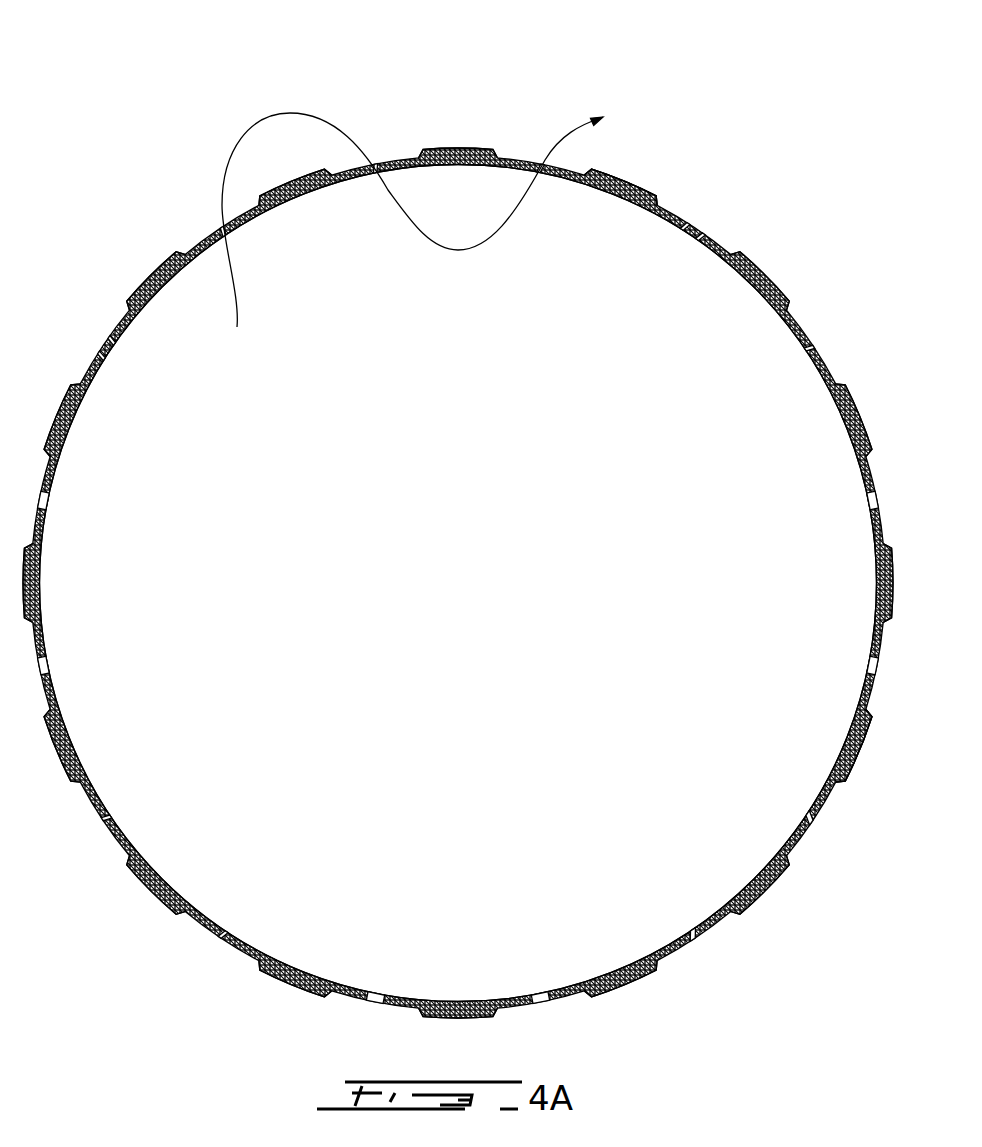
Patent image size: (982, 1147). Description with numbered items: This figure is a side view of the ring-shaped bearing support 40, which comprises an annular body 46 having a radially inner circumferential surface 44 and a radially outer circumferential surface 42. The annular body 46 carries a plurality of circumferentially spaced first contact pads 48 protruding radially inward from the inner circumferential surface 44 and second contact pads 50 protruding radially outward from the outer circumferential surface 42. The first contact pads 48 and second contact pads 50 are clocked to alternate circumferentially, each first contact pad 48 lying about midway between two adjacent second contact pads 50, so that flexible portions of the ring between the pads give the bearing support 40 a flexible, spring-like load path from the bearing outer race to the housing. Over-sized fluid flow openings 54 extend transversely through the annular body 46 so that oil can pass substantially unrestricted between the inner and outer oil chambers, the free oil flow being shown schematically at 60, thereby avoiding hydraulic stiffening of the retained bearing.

The bearing support ring 40 is at (458, 519).
The radially outer circumferential surface 42 is at (846, 792).
The radially inner circumferential surface 44 is at (755, 874).
The annular body 46 is at (641, 188).
The first contact pads 48 is at (296, 200).
The second contact pads 50 is at (452, 148).
The fluid flow openings 54 is at (377, 158).
The oil flow path 60 is at (263, 115).